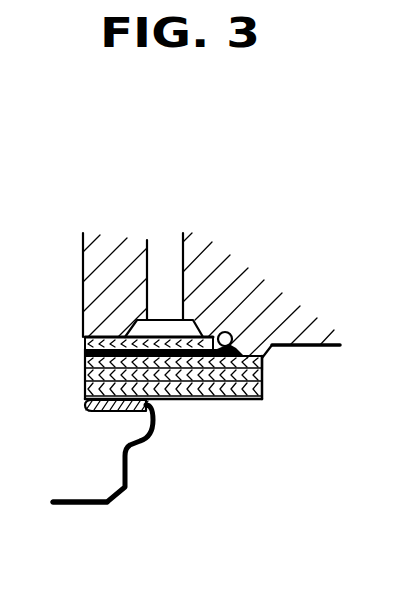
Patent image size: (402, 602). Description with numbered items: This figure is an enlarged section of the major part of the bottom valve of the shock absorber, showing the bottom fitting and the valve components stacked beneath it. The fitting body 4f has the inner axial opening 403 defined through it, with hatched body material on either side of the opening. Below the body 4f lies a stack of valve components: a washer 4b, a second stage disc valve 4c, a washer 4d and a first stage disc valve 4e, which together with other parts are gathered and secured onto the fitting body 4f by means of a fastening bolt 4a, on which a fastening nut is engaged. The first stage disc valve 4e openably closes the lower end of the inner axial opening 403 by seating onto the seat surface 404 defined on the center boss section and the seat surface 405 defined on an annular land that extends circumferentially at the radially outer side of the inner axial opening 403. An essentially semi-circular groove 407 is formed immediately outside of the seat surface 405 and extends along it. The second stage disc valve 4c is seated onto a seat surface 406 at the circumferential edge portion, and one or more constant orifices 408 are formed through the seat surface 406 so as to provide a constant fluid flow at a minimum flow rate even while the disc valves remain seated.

The fastening bolt 4a is at (68, 498).
The washer 4b is at (72, 411).
The second stage disc valve 4c is at (186, 408).
The washer 4d is at (84, 353).
The first stage disc valve 4e is at (203, 398).
The fitting body 4f is at (122, 262).
The inner axial opening 403 is at (165, 258).
The seat surface 404 is at (85, 347).
The seat surface 405 is at (264, 295).
The seat surface 406 is at (262, 380).
The semi-circular groove 407 is at (238, 347).
The constant orifice 408 is at (262, 356).